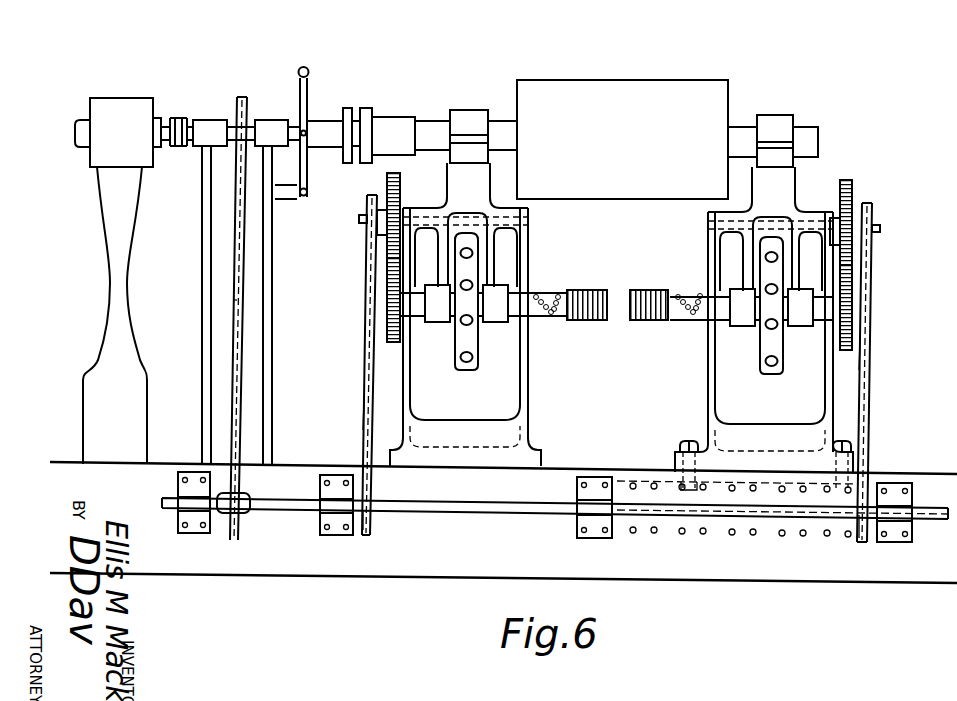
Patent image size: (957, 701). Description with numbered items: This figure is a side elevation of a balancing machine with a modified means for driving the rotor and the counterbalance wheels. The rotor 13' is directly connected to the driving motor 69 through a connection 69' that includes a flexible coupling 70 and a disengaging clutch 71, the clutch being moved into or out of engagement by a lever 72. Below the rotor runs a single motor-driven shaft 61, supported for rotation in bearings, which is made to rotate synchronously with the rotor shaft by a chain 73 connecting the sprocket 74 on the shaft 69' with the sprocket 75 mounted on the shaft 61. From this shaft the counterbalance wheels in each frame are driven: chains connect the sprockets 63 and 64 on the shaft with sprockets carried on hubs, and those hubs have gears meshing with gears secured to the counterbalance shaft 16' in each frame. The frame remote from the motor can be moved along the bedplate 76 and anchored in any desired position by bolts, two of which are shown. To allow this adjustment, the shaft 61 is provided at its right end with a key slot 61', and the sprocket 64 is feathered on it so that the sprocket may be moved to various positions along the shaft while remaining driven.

The driving motor 69 is at (118, 261).
The flexible coupling 70 is at (184, 118).
The connection 69' is at (225, 261).
The sprocket 74 is at (246, 112).
The chain 73 is at (233, 302).
The lever 72 is at (307, 102).
The disengaging clutch 71 is at (358, 110).
The rotor 13' is at (622, 119).
The sprocket 63 is at (372, 530).
The sprocket 64 is at (864, 540).
The counterbalance shaft 16' is at (616, 288).
The bedplate 76 is at (622, 485).
The sprocket 75 is at (239, 516).
The shaft 61 is at (555, 535).
The key slot 61' is at (783, 542).